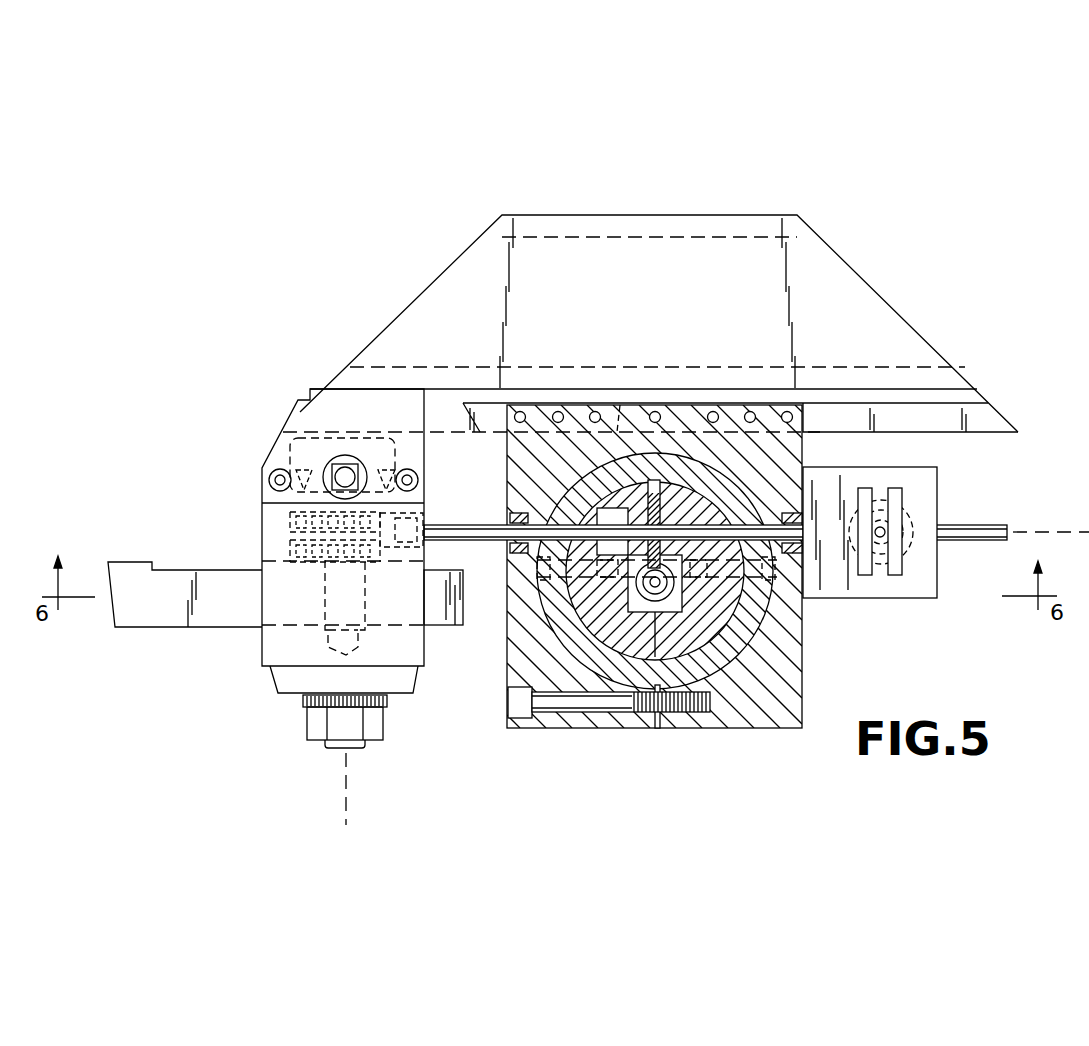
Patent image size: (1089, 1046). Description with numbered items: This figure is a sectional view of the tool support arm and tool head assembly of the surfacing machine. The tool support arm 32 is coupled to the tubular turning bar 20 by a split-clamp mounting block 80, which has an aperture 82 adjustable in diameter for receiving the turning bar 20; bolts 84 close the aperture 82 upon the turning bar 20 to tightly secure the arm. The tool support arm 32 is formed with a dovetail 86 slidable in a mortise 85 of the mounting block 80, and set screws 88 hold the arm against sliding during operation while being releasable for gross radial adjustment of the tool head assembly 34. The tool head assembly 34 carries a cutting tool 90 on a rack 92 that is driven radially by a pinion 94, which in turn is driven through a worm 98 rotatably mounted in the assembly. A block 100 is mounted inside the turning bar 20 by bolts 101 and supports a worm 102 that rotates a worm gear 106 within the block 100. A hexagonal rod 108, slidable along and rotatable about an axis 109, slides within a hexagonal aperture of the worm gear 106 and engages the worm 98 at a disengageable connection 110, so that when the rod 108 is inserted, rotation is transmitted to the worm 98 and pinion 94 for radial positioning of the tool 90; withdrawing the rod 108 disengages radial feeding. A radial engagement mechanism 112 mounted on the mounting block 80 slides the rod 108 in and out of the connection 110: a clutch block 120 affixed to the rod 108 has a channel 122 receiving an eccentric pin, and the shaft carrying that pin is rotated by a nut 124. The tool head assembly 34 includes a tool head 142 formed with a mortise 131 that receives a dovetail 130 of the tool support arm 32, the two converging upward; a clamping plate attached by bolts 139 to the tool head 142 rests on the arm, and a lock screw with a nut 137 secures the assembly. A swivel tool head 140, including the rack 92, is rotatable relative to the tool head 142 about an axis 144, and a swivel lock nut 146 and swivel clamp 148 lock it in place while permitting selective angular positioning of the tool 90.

The turning bar 20 is at (790, 712).
The tool support arm 32 is at (766, 215).
The tool head assembly 34 is at (240, 446).
The split-clamp mounting block 80 is at (680, 728).
The aperture 82 is at (706, 646).
The bolts 84 is at (508, 700).
The mortise 85 is at (620, 405).
The dovetail 86 is at (998, 420).
The set screws 88 is at (665, 410).
The cutting tool 90 is at (107, 572).
The rack 92 is at (183, 627).
The pinion 94 is at (320, 590).
The worm 98 is at (265, 566).
The block 100 is at (715, 607).
The bolts 101 is at (540, 567).
The worm 102 is at (740, 605).
The worm gear 106 is at (608, 493).
The hexagonal rod 108 is at (993, 525).
The axis 109 is at (1057, 531).
The disengageable connection 110 is at (428, 522).
The radial engagement mechanism 112 is at (894, 610).
The clutch block 120 is at (877, 562).
The channel 122 is at (885, 488).
The nut 124 is at (917, 492).
The dovetail 130 is at (292, 440).
The mortise 131 is at (292, 452).
The nut 137 is at (345, 455).
The bolts 139 is at (268, 483).
The swivel tool head 140 is at (258, 643).
The tool head 142 is at (258, 521).
The axis 144 is at (350, 817).
The swivel lock nut 146 is at (307, 732).
The swivel clamp 148 is at (297, 699).